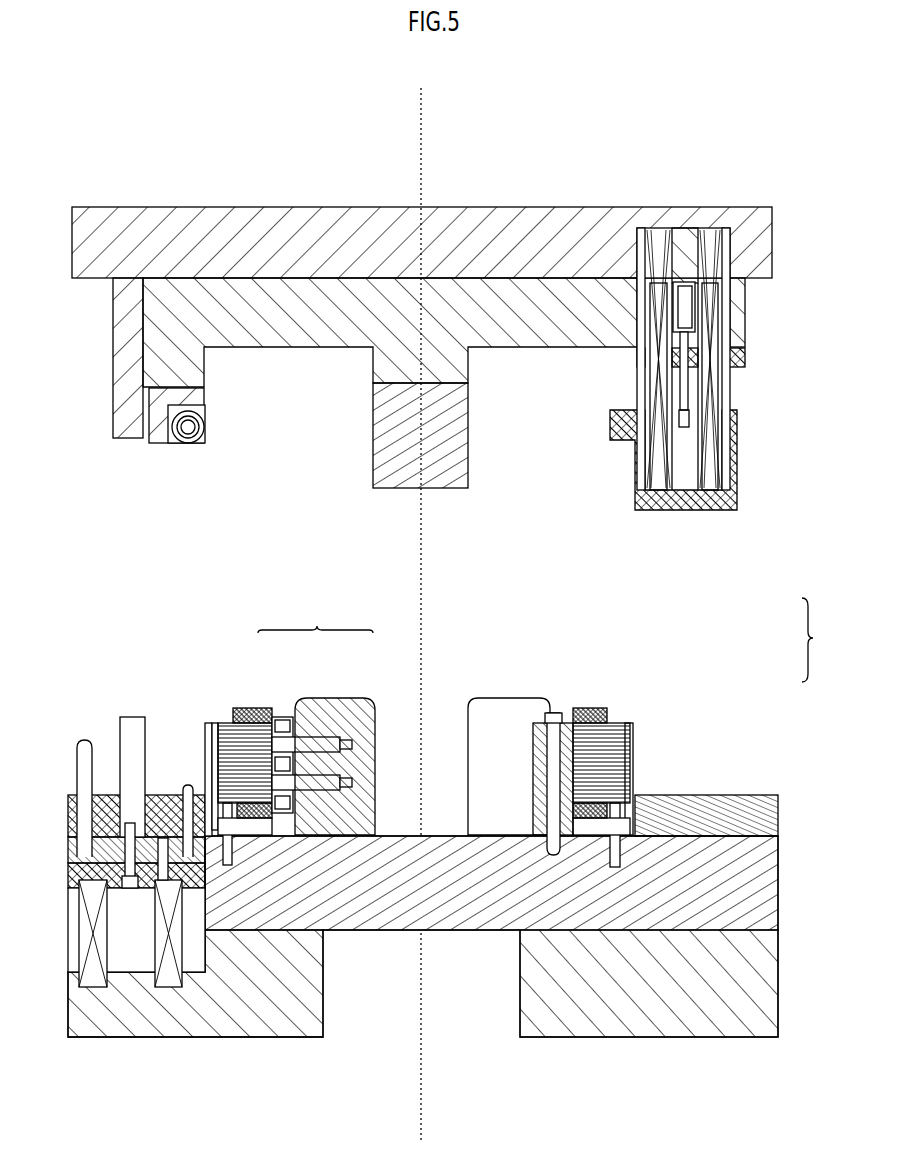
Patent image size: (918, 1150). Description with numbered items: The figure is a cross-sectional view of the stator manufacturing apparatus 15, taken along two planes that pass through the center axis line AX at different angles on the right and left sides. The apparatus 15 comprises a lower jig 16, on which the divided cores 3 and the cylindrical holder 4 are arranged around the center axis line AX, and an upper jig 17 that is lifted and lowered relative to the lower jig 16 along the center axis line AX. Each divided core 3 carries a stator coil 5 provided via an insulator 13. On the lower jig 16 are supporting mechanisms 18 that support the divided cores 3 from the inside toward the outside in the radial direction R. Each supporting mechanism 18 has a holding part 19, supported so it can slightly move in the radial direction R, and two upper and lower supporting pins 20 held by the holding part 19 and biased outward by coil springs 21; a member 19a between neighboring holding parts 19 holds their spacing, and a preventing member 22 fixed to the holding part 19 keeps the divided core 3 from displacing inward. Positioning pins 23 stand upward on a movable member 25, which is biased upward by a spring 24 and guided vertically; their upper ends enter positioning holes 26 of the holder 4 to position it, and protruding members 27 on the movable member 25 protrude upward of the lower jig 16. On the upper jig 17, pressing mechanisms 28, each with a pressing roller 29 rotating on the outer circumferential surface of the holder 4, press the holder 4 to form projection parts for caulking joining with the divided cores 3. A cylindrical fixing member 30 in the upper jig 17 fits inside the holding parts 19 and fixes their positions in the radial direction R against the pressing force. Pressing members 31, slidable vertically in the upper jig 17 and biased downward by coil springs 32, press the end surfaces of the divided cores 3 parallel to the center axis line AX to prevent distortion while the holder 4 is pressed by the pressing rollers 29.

The divided core 3 is at (222, 760).
The holder 4 is at (212, 760).
The stator coil 5 is at (250, 710).
The insulator 13 is at (661, 786).
The stator manufacturing apparatus 15 is at (817, 640).
The lower jig 16 is at (777, 767).
The upper jig 17 is at (760, 533).
The supporting mechanism 18 is at (315, 617).
The holding part 19 is at (350, 700).
The member 19a is at (560, 712).
The supporting pin 20 is at (330, 740).
The coil spring 21 is at (340, 775).
The preventing member 22 is at (282, 716).
The positioning pin 23 is at (205, 800).
The spring 24 is at (160, 920).
The movable member 25 is at (67, 843).
The positioning hole 26 is at (186, 782).
The protruding member 27 is at (130, 727).
The pressing mechanism 28 is at (106, 424).
The pressing roller 29 is at (188, 446).
The fixing member 30 is at (470, 467).
The pressing member 31 is at (618, 440).
The coil spring 32 is at (683, 453).
The center axis line AX is at (422, 112).
The radial direction R is at (472, 1097).